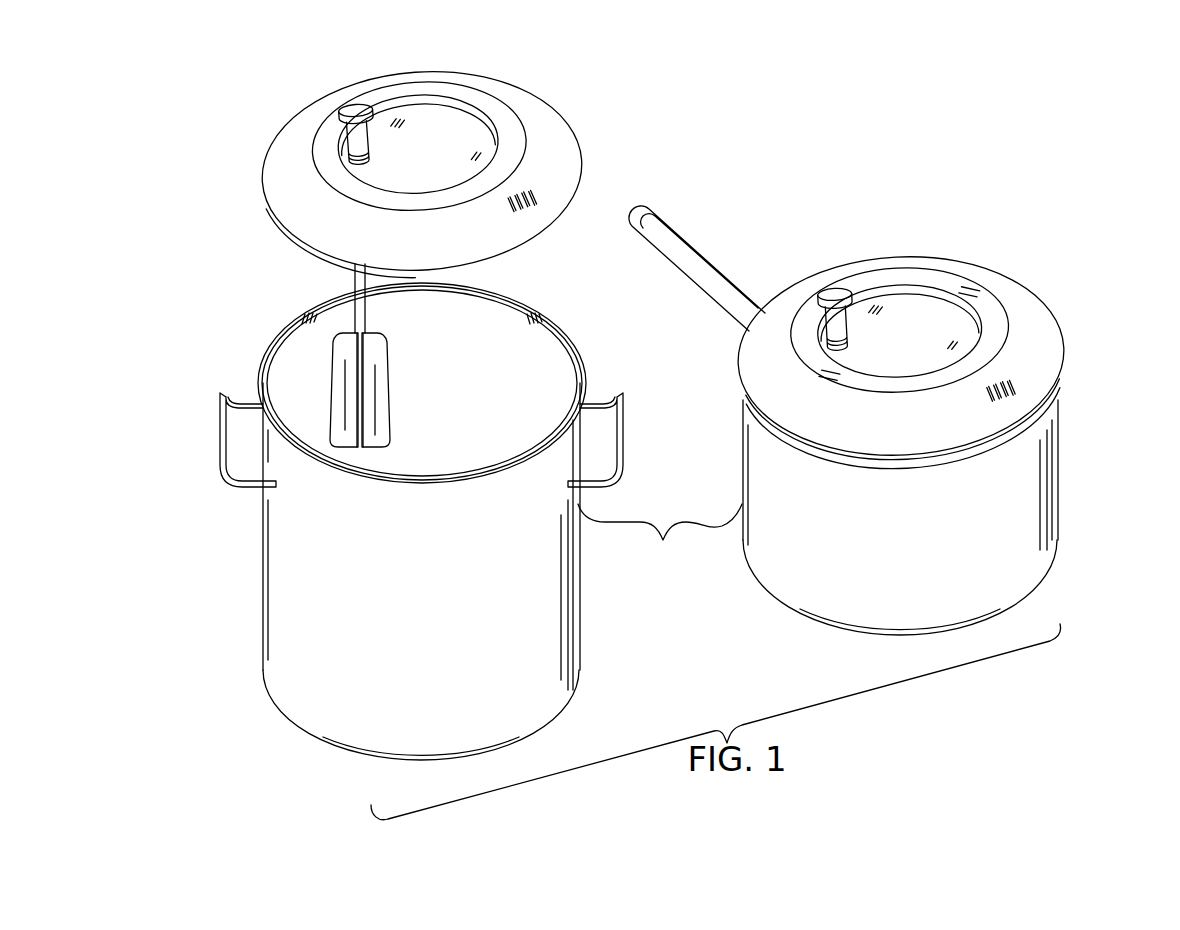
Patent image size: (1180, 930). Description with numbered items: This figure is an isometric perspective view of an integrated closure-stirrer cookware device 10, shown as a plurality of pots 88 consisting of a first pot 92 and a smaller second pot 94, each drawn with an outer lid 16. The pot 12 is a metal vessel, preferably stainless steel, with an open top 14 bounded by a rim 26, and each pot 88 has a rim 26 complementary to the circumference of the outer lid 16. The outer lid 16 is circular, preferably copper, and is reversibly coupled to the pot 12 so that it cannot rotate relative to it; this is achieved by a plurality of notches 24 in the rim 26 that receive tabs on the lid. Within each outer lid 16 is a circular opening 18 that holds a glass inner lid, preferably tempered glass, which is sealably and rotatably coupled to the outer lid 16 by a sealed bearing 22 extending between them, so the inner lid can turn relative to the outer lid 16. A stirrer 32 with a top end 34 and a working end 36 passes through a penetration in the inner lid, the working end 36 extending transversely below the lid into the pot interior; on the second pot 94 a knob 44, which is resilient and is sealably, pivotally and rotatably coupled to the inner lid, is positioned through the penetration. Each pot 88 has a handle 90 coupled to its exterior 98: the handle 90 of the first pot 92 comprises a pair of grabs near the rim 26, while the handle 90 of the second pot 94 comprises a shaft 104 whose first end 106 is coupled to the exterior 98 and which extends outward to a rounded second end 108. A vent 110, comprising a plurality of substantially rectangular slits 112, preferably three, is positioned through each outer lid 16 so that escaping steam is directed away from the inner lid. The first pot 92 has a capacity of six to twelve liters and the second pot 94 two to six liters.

The integrated closure-stirrer cookware device 10 is at (818, 142).
The pot 12 is at (540, 483).
The open top 14 is at (549, 375).
The outer lid 16 is at (685, 262).
The opening 18 is at (900, 329).
The sealed bearing 22 is at (419, 146).
The notches 24 is at (299, 314).
The rim 26 is at (258, 345).
The stirrer 32 is at (366, 300).
The top end 34 is at (357, 134).
The working end 36 is at (396, 410).
The knob 44 is at (835, 320).
The plurality of pots 88 is at (660, 542).
The handle 90 is at (212, 437).
The first pot 92 is at (262, 577).
The second pot 94 is at (1060, 478).
The exterior 98 is at (691, 555).
The shaft 104 is at (706, 250).
The first end 106 is at (730, 343).
The second end 108 is at (639, 200).
The vent 110 is at (522, 201).
The slits 112 is at (1000, 390).